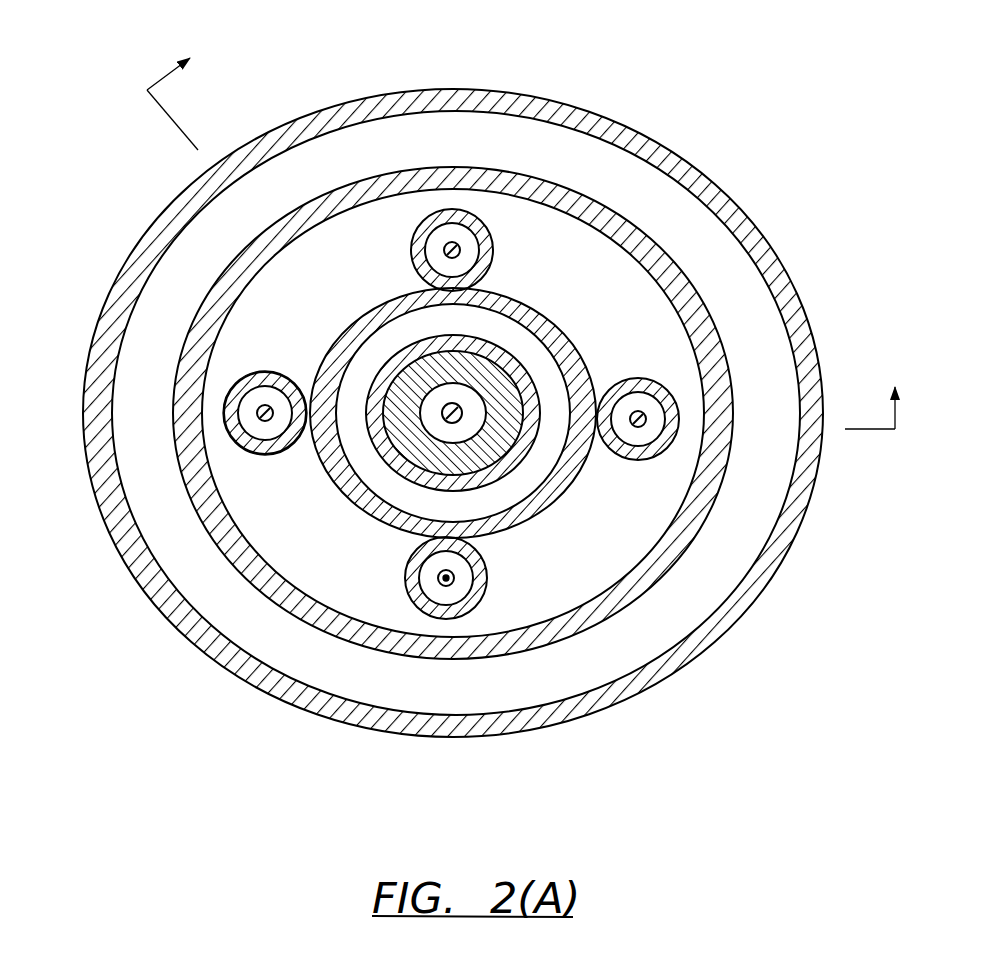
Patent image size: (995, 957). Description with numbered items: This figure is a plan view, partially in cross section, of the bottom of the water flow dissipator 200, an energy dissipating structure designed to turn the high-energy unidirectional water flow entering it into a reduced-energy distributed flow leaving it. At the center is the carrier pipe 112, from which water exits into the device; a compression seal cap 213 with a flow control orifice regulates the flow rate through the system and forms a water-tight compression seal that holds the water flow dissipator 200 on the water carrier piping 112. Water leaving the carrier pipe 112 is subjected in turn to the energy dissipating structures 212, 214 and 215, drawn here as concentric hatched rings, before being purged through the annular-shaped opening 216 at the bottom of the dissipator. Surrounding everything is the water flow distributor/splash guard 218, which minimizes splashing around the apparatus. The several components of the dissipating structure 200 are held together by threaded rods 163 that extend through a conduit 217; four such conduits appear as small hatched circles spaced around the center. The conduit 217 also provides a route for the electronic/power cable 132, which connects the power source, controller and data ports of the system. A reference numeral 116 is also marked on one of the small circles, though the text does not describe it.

The water flow dissipator 200 is at (635, 27).
The carrier pipe 112 is at (494, 337).
The lift pin hole 116 is at (441, 238).
The electronic/power cable 132 is at (452, 588).
The threaded rods 163 is at (258, 402).
The energy dissipating structure 212 is at (438, 423).
The compression seal cap 213 is at (497, 387).
The energy dissipating structure 214 is at (386, 537).
The energy dissipating structure 215 is at (607, 610).
The annular-shaped opening 216 is at (707, 582).
The conduit 217 is at (218, 412).
The water flow distributor/splash guard 218 is at (140, 595).